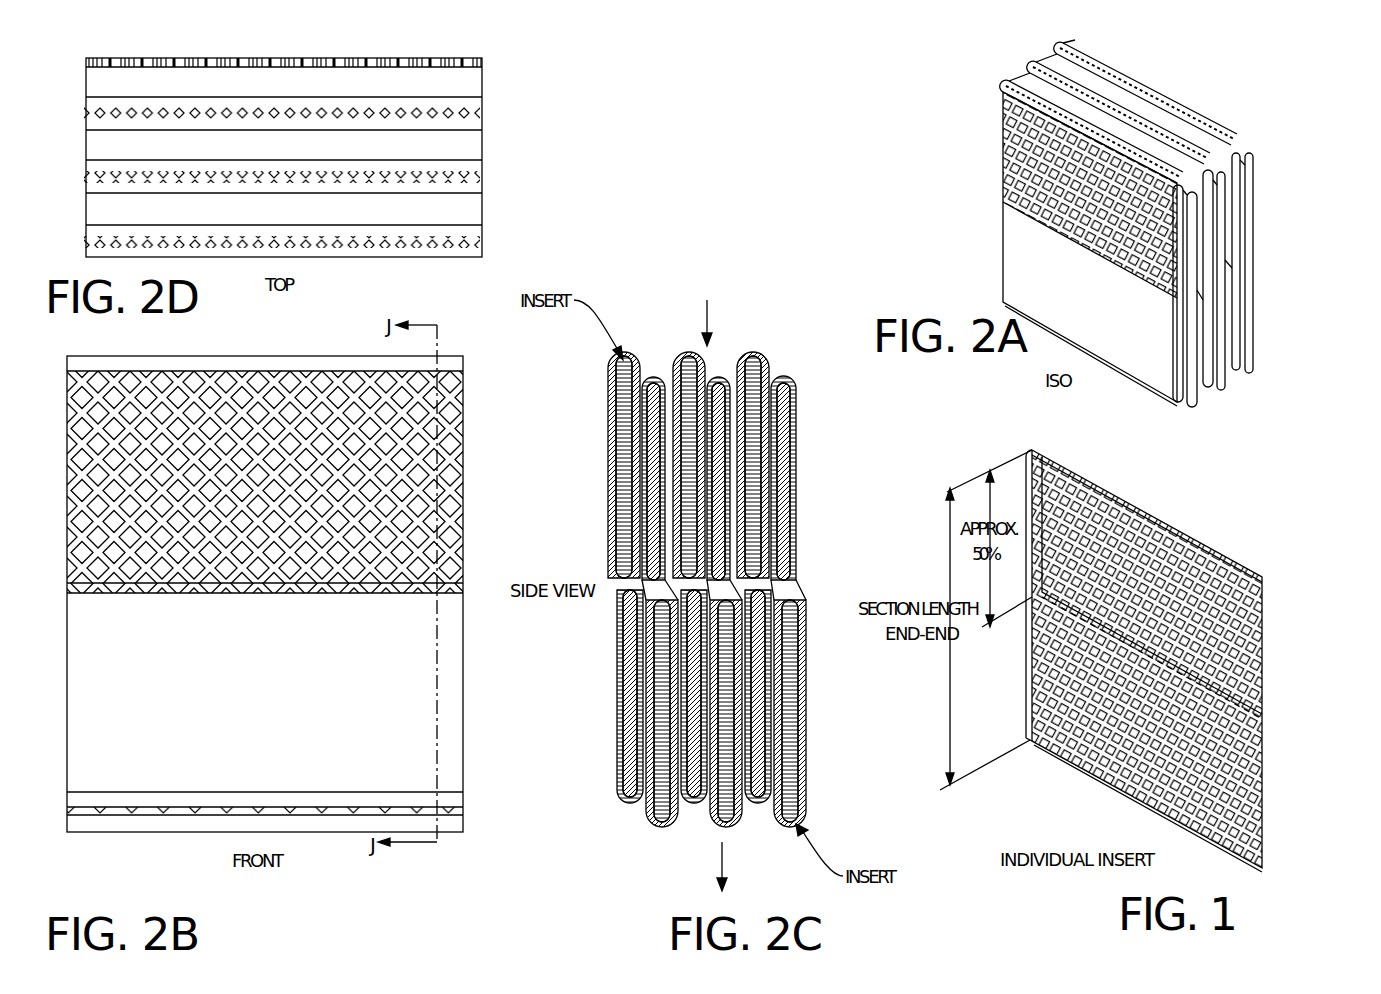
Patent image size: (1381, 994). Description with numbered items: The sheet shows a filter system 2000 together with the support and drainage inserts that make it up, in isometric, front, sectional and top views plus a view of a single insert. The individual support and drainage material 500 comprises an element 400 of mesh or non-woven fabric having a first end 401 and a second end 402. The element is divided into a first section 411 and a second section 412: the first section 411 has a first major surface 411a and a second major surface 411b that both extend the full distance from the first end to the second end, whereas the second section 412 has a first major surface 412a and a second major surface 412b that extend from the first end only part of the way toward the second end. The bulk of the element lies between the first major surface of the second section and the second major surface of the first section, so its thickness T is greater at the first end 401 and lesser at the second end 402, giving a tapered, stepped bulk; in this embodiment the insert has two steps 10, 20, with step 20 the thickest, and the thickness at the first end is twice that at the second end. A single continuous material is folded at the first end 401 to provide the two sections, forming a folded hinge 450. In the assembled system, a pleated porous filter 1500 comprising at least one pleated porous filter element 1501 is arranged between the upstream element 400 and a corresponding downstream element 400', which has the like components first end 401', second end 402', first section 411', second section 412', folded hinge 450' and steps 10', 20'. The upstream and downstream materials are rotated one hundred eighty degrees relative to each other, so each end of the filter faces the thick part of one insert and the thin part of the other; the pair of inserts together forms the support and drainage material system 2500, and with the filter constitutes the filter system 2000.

In FIG. 2C, the first step 10 is at (595, 696).
In FIG. 1, the first step 10 is at (975, 715).
In FIG. 2C, the first step of downstream insert 10' is at (815, 540).
In FIG. 2C, the second step 20 is at (571, 499).
In FIG. 1, the second step 20 is at (975, 568).
In FIG. 2C, the second step of downstream insert 20' is at (807, 696).
In FIG. 2C, the element 400 is at (681, 449).
In FIG. 2A, the element 400 is at (1240, 260).
In FIG. 1, the element 400 is at (1163, 659).
In FIG. 2C, the downstream element 400' is at (754, 754).
In FIG. 2A, the downstream element 400' is at (1259, 385).
In FIG. 2D, the first end 401 is at (332, 177).
In FIG. 2C, the first end 401 is at (766, 433).
In FIG. 2A, the first end 401 is at (1149, 112).
In FIG. 1, the first end 401 is at (1118, 484).
In FIG. 2C, the first end of downstream element 401' is at (832, 809).
In FIG. 2A, the first end of downstream element 401' is at (1218, 416).
In FIG. 2C, the second end 402 is at (742, 743).
In FIG. 2A, the second end 402 is at (1266, 353).
In FIG. 1, the second end 402 is at (1127, 806).
In FIG. 2C, the second end of downstream element 402' is at (759, 473).
In FIG. 2A, the second end of downstream element 402' is at (1255, 187).
In FIG. 2C, the first section 411 is at (593, 696).
In FIG. 1, the first section 411 is at (1254, 794).
In FIG. 1, the first major surface of first section 411a is at (1250, 752).
In FIG. 1, the second major surface of first section 411b is at (1027, 670).
In FIG. 2C, the first section of downstream element 411' is at (823, 470).
In FIG. 2C, the second section 412 is at (620, 465).
In FIG. 1, the second section 412 is at (1178, 588).
In FIG. 1, the first major surface of second section 412a is at (1250, 640).
In FIG. 1, the second major surface of second section 412b is at (1037, 503).
In FIG. 2C, the second section of downstream element 412' is at (827, 652).
In FIG. 2C, the folded hinge 450 is at (738, 324).
In FIG. 2C, the folded hinge of downstream element 450' is at (829, 825).
In FIG. 2C, the support and drainage material 500 is at (748, 328).
In FIG. 1, the support and drainage material 500 is at (1090, 822).
In FIG. 2C, the pleated porous filter 1500 is at (630, 805).
In FIG. 2A, the pleated porous filter 1500 is at (1197, 132).
In FIG. 2D, the pleated porous filter element 1501 is at (100, 84).
In FIG. 2B, the filter system 2000 is at (108, 899).
In FIG. 2C, the filter system 2000 is at (592, 934).
In FIG. 2A, the filter system 2000 is at (972, 159).
In FIG. 2C, the support and drainage material system 2500 is at (658, 390).